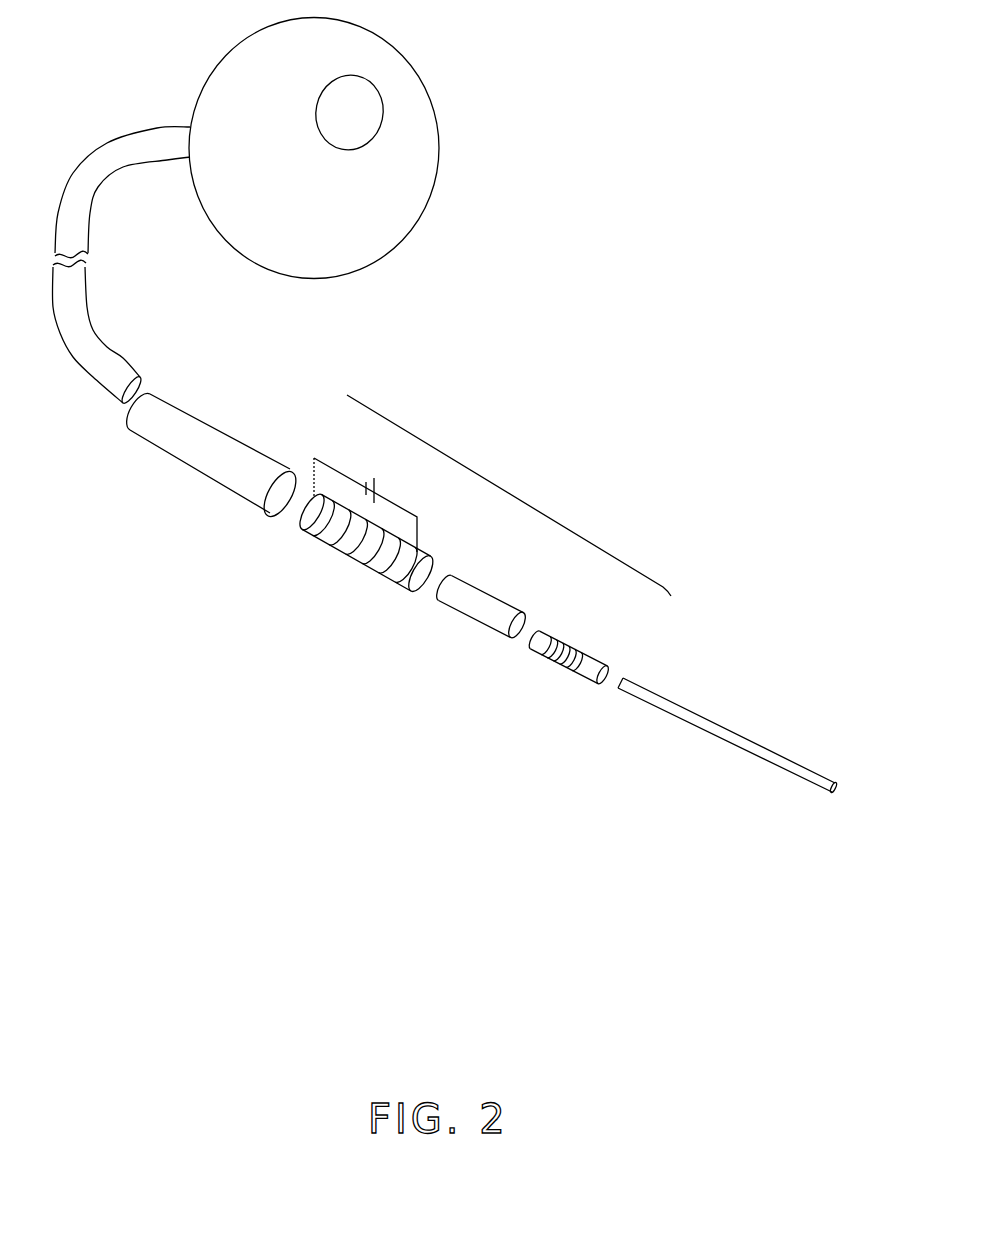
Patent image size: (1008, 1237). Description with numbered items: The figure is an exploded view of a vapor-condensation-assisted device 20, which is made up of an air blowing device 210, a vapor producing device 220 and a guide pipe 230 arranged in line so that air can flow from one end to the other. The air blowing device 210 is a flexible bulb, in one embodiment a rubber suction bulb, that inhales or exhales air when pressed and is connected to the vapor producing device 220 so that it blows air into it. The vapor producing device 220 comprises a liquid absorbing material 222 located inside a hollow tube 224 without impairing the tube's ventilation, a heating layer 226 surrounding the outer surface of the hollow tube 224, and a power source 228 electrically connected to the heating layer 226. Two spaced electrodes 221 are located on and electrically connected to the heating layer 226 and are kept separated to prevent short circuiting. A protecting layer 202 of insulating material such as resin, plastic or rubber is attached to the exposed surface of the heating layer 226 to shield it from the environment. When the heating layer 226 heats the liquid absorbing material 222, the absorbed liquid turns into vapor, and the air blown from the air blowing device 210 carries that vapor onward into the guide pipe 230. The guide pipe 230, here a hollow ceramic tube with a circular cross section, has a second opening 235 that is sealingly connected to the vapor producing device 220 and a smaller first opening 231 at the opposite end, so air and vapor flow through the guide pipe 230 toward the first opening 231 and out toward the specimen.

The vapor-condensation-assisted device 20 is at (470, 203).
The air blowing device 210 is at (352, 213).
The protecting layer 202 is at (207, 437).
The vapor producing device 220 is at (523, 505).
The electrodes 221 is at (308, 495).
The heating layer 226 is at (385, 537).
The power source 228 is at (338, 530).
The hollow tube 224 is at (482, 603).
The liquid absorbing material 222 is at (567, 643).
The guide pipe 230 is at (760, 751).
The second opening 235 is at (623, 677).
The first opening 231 is at (836, 791).